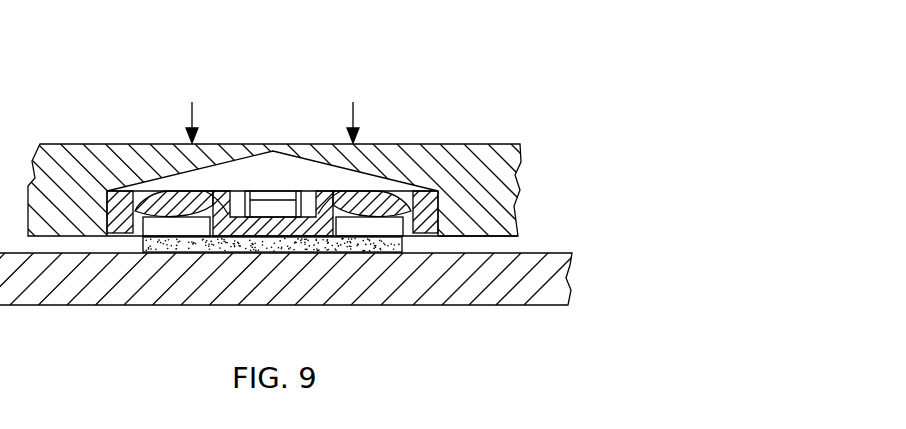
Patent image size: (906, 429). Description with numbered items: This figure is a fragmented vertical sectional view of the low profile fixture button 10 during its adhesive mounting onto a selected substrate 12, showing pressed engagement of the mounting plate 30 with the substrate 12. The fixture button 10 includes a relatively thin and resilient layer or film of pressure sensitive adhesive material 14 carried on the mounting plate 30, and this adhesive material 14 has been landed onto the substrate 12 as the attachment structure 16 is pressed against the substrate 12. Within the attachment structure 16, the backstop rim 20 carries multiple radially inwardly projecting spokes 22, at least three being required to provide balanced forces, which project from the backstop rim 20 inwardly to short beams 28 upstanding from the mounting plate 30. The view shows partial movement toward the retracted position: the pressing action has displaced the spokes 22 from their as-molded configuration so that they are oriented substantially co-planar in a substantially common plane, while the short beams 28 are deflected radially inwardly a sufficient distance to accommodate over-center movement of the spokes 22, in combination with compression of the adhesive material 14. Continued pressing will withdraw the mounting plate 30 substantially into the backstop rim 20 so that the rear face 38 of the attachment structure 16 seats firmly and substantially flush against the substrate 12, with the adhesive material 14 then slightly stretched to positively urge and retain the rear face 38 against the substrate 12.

The low profile fixture button 10 is at (272, 182).
The substrate 12 is at (550, 297).
The adhesive material 14 is at (372, 248).
The attachment structure 16 is at (503, 172).
The backstop rim 20 is at (423, 195).
The spokes 22 is at (377, 194).
The short beams 28 is at (317, 192).
The mounting plate 30 is at (158, 218).
The rear face 38 is at (487, 238).